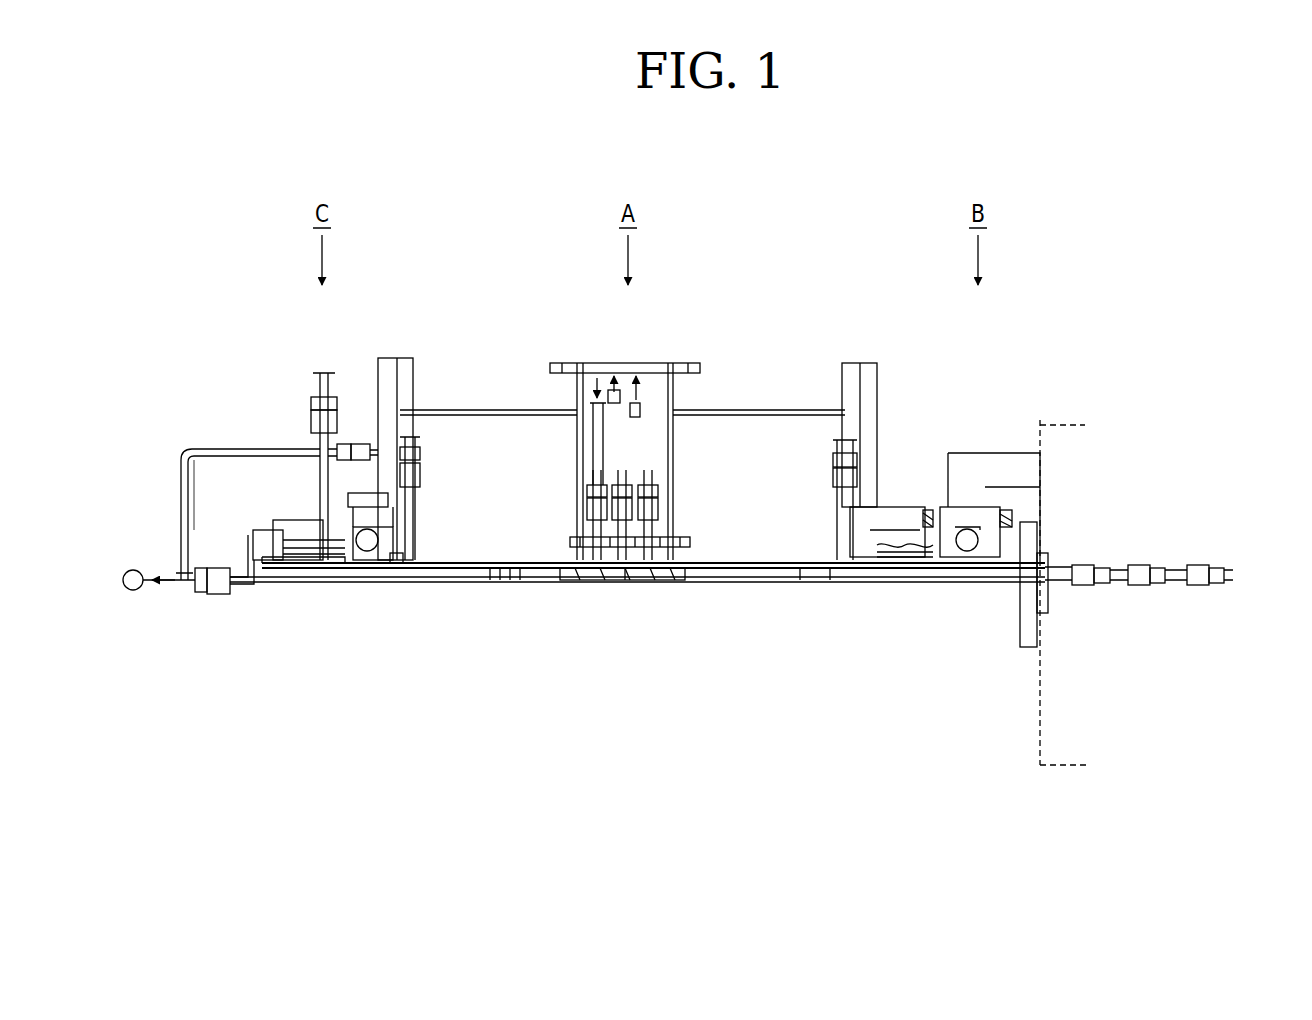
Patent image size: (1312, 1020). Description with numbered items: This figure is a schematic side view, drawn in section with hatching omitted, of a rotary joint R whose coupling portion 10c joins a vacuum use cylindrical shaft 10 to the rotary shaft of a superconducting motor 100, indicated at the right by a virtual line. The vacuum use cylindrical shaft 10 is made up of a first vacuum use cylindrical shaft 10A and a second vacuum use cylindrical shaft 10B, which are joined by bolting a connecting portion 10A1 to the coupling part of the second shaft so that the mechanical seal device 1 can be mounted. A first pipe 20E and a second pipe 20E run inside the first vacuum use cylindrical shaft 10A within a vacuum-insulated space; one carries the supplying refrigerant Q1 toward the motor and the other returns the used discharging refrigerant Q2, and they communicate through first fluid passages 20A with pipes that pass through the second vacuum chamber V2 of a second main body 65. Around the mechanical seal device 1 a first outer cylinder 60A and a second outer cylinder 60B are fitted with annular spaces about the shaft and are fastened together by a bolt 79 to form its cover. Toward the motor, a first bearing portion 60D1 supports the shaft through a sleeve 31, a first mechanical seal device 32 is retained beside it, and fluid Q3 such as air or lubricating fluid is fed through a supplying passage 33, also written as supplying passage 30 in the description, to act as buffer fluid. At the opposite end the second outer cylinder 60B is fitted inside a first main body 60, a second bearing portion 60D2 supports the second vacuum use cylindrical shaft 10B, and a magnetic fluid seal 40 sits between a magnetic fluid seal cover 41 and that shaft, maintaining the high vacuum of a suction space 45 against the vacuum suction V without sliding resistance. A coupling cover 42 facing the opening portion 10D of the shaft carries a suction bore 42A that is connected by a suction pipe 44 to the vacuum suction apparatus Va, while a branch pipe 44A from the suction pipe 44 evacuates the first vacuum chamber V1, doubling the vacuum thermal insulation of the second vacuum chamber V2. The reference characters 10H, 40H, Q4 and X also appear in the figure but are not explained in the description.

The mechanical seal device 1 is at (710, 590).
The vacuum use cylindrical shaft 10 is at (398, 572).
The first vacuum use cylindrical shaft 10A is at (815, 582).
The connecting portion 10A1 is at (585, 582).
The second vacuum use cylindrical shaft 10B is at (515, 582).
The opening portion 10D is at (272, 568).
The hole 10H is at (495, 582).
The coupling portion 10c is at (1042, 577).
The first fluid passage 20A is at (577, 425).
The first and second pipes 20E is at (1083, 563).
The supplying passage 30 is at (972, 507).
The sleeve 31 is at (935, 582).
The first mechanical seal device 32 is at (868, 582).
The supplying passage 33 is at (937, 472).
The magnetic fluid seal 40 is at (330, 562).
The valve stem 40H is at (322, 363).
The magnetic fluid seal cover 41 is at (300, 527).
The coupling cover 42 is at (248, 552).
The suction bore 42A is at (238, 595).
The suction pipe 44 is at (177, 574).
The branch pipe 44A is at (263, 448).
The suction space 45 is at (268, 530).
The first main body 60 is at (400, 358).
The first outer cylinder 60A is at (837, 530).
The second outer cylinder 60B is at (420, 535).
The first bearing portion 60D1 is at (970, 520).
The second bearing portion 60D2 is at (383, 556).
The second main body 65 is at (577, 483).
The bolt 79 is at (577, 540).
The superconducting motor 100 is at (1048, 705).
The supplying refrigerant Q1 is at (1235, 573).
The discharging refrigerant Q2 is at (645, 478).
The fluid Q3 is at (948, 495).
The pressing direction Q4 is at (332, 355).
The rotary joint R is at (775, 275).
The vacuum suction V is at (185, 505).
The first vacuum chamber V1 is at (474, 495).
The second vacuum chamber V2 is at (640, 405).
The vacuum suction apparatus Va is at (133, 593).
The direction X is at (740, 505).